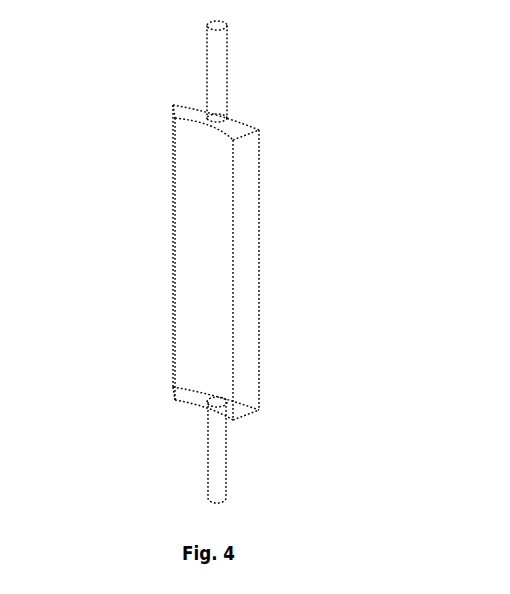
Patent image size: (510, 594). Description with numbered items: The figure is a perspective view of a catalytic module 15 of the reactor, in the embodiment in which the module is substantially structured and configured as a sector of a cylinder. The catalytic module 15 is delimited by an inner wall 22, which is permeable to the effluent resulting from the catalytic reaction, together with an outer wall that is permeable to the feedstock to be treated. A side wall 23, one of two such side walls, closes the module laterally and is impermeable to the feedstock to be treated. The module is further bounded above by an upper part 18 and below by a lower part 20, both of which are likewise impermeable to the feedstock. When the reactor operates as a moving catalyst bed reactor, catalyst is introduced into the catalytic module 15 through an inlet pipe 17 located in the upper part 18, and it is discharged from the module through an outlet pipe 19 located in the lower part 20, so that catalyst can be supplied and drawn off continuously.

The catalytic module 15 is at (126, 141).
The inlet pipe 17 is at (230, 57).
The upper part 18 is at (252, 130).
The outlet pipe 19 is at (197, 453).
The lower part 20 is at (256, 413).
The inner wall 22 is at (181, 302).
The side wall 23 is at (255, 239).